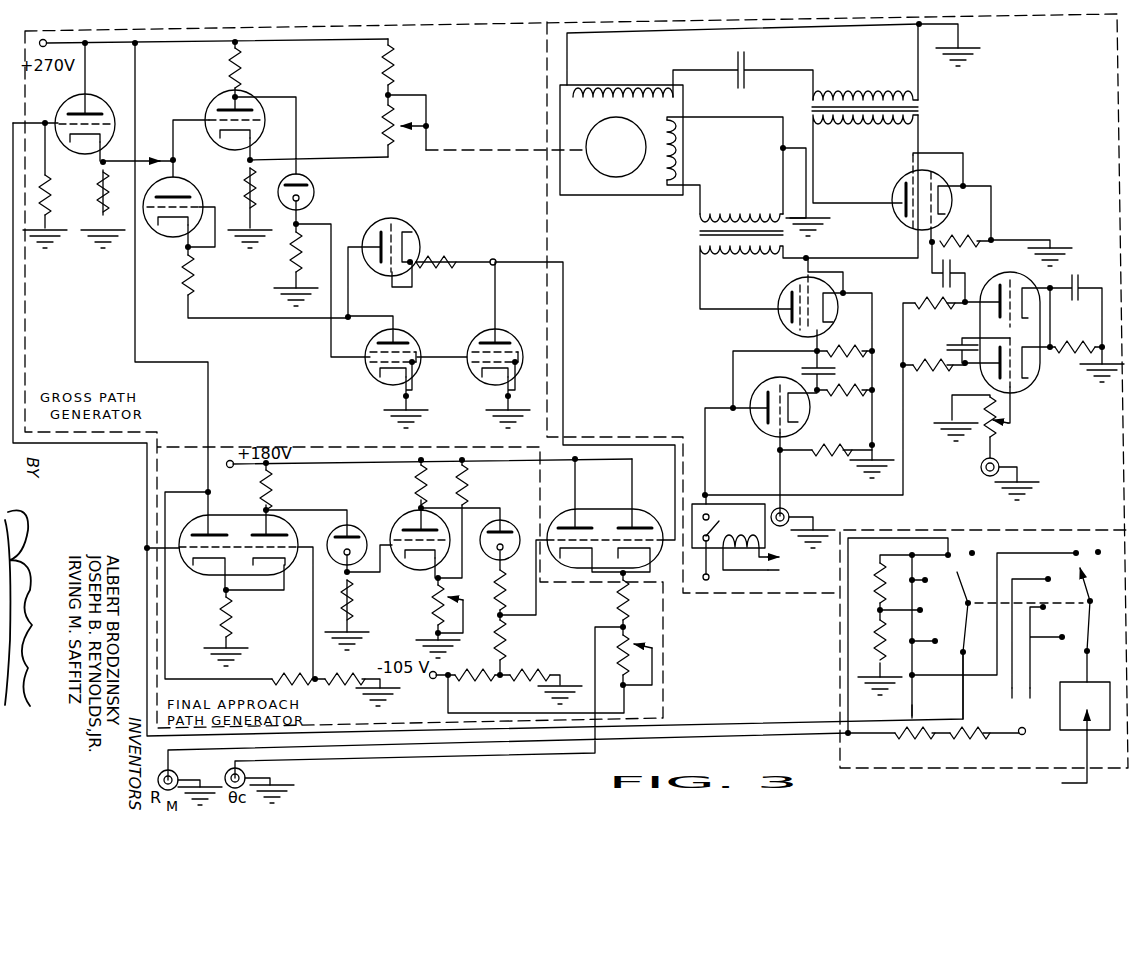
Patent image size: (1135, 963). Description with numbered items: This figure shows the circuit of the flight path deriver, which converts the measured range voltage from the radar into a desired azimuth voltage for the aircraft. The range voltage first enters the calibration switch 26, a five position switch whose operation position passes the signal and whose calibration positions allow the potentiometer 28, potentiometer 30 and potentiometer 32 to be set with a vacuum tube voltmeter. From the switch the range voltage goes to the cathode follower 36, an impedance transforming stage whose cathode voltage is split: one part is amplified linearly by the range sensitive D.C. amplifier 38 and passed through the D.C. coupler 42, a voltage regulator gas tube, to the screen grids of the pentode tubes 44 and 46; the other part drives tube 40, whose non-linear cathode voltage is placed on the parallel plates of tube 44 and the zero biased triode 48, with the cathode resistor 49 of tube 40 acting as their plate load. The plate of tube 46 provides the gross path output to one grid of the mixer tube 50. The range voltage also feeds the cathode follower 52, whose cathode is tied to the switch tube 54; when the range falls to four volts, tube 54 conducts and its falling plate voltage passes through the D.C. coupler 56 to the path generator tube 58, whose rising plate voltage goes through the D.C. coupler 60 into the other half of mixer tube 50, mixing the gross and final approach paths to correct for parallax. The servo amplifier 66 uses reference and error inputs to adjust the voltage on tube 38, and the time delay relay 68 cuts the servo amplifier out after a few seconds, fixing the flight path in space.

The calibration switch 26 is at (986, 663).
The potentiometer 28 is at (913, 722).
The potentiometer 30 is at (656, 637).
The potentiometer 32 is at (465, 607).
The cathode follower 36 is at (73, 100).
The range sensitive D.C. amplifier 38 is at (214, 100).
The tube 40 is at (203, 190).
The D.C. coupler 42 is at (311, 185).
The pentode vacuum tube 44 is at (412, 337).
The pentode vacuum tube 46 is at (513, 337).
The zero biased triode 48 is at (410, 236).
The cathode resistor 49 is at (188, 272).
The mixer tube 50 is at (620, 515).
The cathode follower 52 is at (195, 530).
The switch tube 54 is at (292, 535).
The D.C. coupler 56 is at (364, 538).
The path generator tube 58 is at (412, 568).
The D.C. coupler 60 is at (511, 535).
The servo amplifier 66 is at (842, 307).
The time delay relay 68 is at (746, 481).